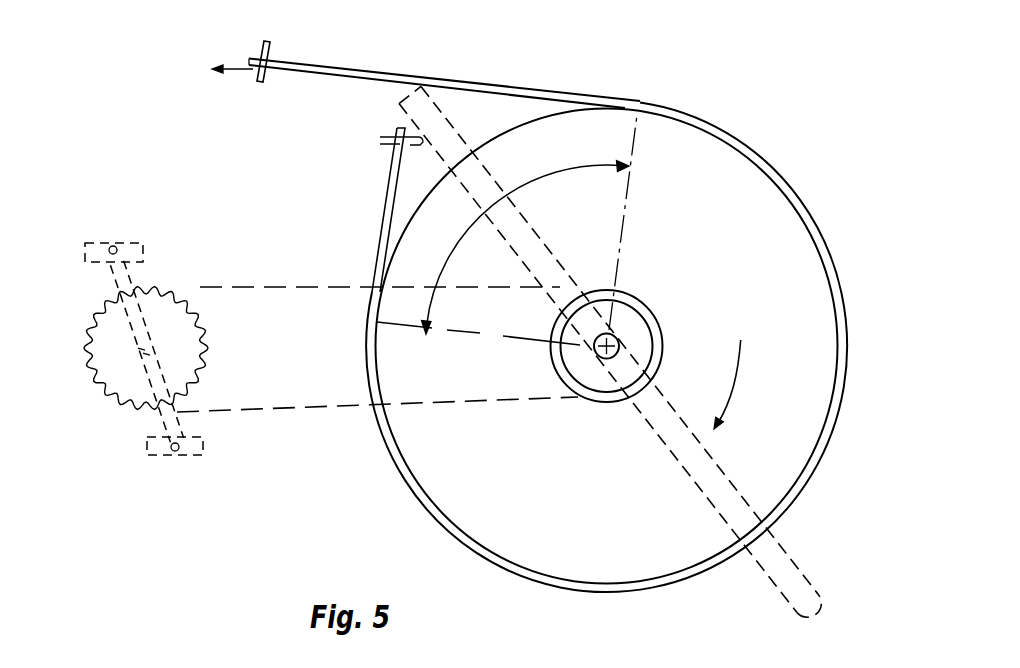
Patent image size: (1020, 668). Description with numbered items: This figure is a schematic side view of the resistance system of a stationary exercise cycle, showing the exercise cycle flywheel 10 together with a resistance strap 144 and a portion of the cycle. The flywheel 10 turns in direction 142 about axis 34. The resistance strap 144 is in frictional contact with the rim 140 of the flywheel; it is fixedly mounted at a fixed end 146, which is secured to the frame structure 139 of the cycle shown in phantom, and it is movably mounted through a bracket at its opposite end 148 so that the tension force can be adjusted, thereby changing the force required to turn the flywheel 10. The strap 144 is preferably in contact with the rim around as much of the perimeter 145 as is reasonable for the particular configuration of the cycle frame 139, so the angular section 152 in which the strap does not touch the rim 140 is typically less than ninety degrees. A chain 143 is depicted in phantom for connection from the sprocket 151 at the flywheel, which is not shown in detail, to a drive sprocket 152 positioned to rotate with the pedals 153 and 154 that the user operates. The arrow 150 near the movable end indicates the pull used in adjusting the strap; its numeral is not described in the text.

The exercise cycle flywheel 10 is at (708, 538).
The axis 34 is at (599, 356).
The frame structure 139 is at (673, 460).
The rim 140 is at (385, 210).
The direction 142 is at (732, 405).
The chain 143 is at (255, 288).
The resistance strap 144 is at (300, 70).
The perimeter 145 is at (376, 414).
The fixed end 146 is at (385, 140).
The opposite end 148 is at (289, 60).
The pull direction arrow 150 is at (240, 72).
The sprocket 151 is at (551, 330).
The angular section / drive sprocket 152 is at (103, 390).
The pedal 153 is at (143, 252).
The pedal 154 is at (175, 457).